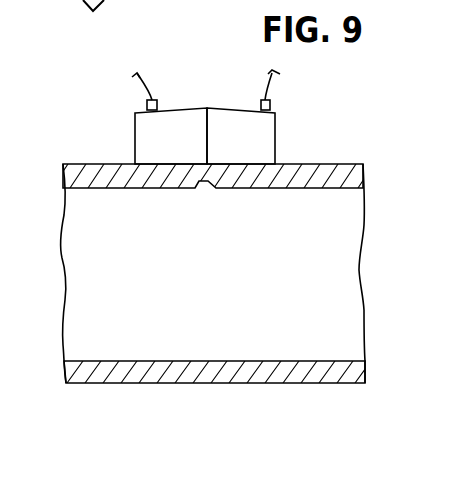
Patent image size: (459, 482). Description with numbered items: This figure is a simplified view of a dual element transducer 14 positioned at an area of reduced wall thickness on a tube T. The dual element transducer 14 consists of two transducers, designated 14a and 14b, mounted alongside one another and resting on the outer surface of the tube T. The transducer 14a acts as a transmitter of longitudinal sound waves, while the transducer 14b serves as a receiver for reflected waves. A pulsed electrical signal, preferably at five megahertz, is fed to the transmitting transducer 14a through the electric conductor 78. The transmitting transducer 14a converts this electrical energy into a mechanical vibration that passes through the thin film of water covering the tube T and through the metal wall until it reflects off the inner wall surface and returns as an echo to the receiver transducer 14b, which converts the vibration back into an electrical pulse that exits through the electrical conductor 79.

The tube T is at (80, 163).
The dual element transducer 14 is at (211, 124).
The transducer 14a is at (270, 143).
The transducer 14b is at (145, 138).
The electric conductor 78 is at (268, 94).
The electrical conductor 79 is at (150, 88).